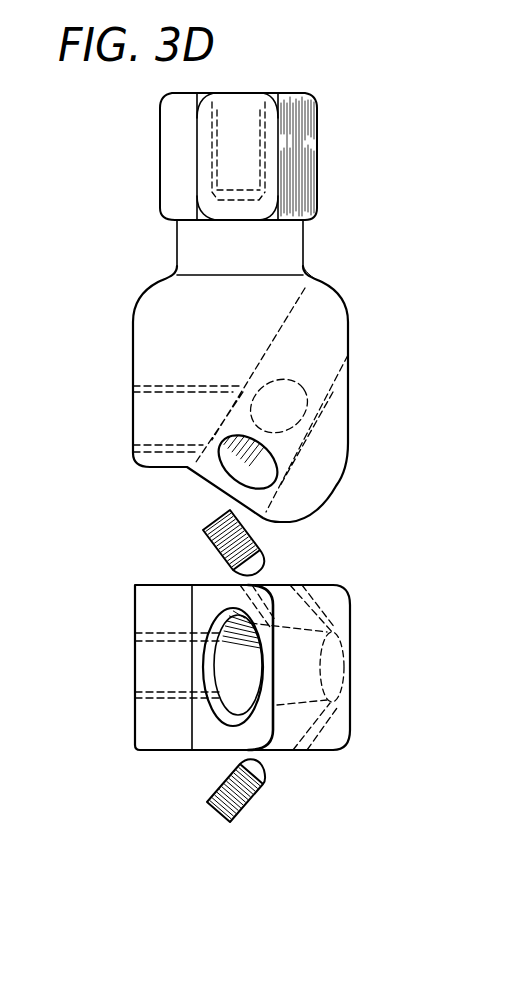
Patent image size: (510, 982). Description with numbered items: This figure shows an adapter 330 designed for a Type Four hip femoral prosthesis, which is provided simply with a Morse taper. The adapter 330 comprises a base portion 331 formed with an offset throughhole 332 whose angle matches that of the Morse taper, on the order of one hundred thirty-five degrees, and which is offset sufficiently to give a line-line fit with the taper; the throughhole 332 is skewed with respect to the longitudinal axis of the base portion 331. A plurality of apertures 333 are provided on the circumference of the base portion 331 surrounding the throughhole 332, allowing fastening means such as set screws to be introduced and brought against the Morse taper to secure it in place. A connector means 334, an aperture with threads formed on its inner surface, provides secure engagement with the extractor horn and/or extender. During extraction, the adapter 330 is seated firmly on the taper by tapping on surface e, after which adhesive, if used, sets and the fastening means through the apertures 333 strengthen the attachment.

The adapter 330 is at (120, 212).
The base portion 331 is at (320, 500).
The offset throughhole 332 is at (340, 394).
The apertures 333 is at (228, 467).
The connector means 334 is at (308, 134).
The surface e is at (343, 282).